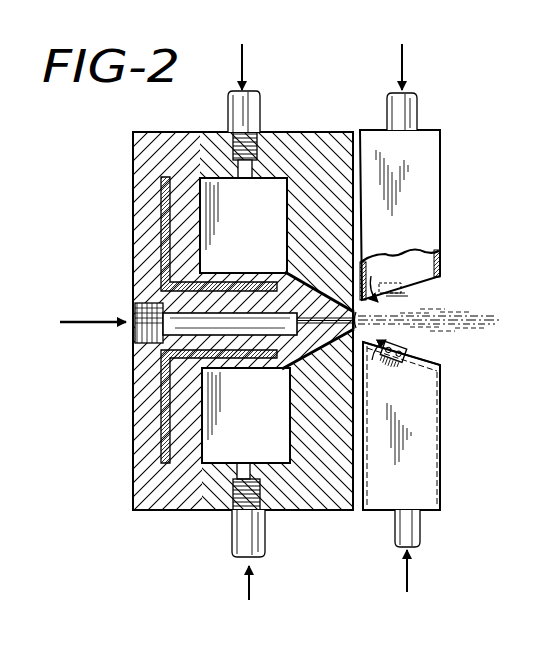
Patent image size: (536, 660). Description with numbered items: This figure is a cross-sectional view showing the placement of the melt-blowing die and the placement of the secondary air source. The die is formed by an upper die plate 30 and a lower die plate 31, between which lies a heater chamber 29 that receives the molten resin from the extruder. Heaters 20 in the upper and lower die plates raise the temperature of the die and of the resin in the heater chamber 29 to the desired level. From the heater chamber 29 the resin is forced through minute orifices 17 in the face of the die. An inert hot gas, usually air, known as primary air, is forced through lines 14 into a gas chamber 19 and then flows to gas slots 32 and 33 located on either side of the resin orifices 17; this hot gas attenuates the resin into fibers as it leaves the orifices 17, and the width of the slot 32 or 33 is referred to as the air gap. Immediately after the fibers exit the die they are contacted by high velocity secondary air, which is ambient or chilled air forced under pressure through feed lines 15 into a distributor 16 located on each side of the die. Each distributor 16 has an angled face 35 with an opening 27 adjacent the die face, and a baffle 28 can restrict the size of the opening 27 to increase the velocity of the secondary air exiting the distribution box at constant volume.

The lines 14 is at (262, 108).
The feed lines 15 is at (419, 118).
The distributor 16 is at (427, 195).
The orifices 17 is at (344, 345).
The gas chamber 19 is at (259, 239).
The heaters 20 is at (161, 213).
The opening 27 is at (372, 310).
The baffle 28 is at (405, 256).
The heater chamber 29 is at (206, 325).
The upper die plate 30 is at (133, 153).
The lower die plate 31 is at (133, 470).
The gas slot 32 is at (320, 277).
The gas slot 33 is at (313, 352).
The angled face 35 is at (400, 289).